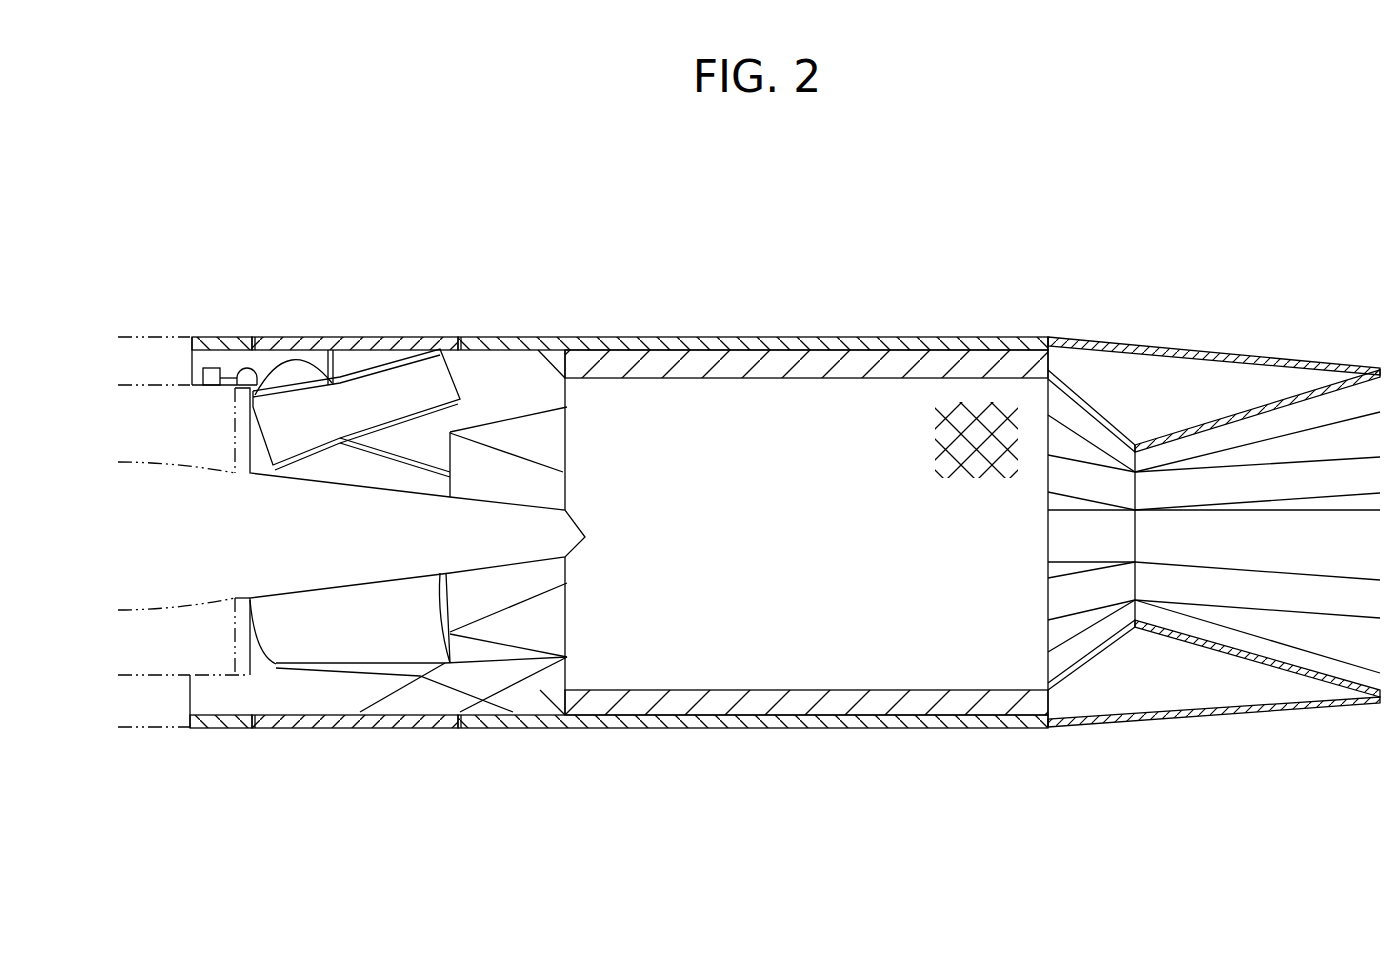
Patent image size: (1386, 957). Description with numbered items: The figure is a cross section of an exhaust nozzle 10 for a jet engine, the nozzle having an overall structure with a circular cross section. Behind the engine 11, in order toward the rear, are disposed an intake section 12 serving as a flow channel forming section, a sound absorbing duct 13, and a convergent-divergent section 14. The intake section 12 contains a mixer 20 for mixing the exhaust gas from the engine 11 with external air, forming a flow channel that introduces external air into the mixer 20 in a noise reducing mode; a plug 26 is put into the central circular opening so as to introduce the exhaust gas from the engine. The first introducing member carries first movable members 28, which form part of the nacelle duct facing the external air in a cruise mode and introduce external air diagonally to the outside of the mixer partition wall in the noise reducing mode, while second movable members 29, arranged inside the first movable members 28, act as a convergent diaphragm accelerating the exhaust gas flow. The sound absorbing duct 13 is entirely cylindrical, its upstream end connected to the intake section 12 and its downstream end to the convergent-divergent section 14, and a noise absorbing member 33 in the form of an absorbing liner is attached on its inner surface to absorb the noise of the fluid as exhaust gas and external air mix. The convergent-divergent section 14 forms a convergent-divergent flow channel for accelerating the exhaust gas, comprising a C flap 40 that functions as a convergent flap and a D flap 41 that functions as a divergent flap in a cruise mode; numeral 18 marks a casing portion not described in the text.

The exhaust nozzle 10 is at (1004, 274).
The engine 11 is at (153, 365).
The intake section 12 is at (186, 795).
The sound absorbing duct 13 is at (577, 797).
The convergent-divergent section 14 is at (1050, 798).
The casing 18 is at (343, 730).
The mixer 20 is at (531, 405).
The plug 26 is at (540, 487).
The first movable member 28 is at (358, 348).
The second movable member 29 is at (446, 361).
The noise absorbing member 33 is at (957, 447).
The C flap 40 is at (1095, 403).
The D flap 41 is at (1168, 431).